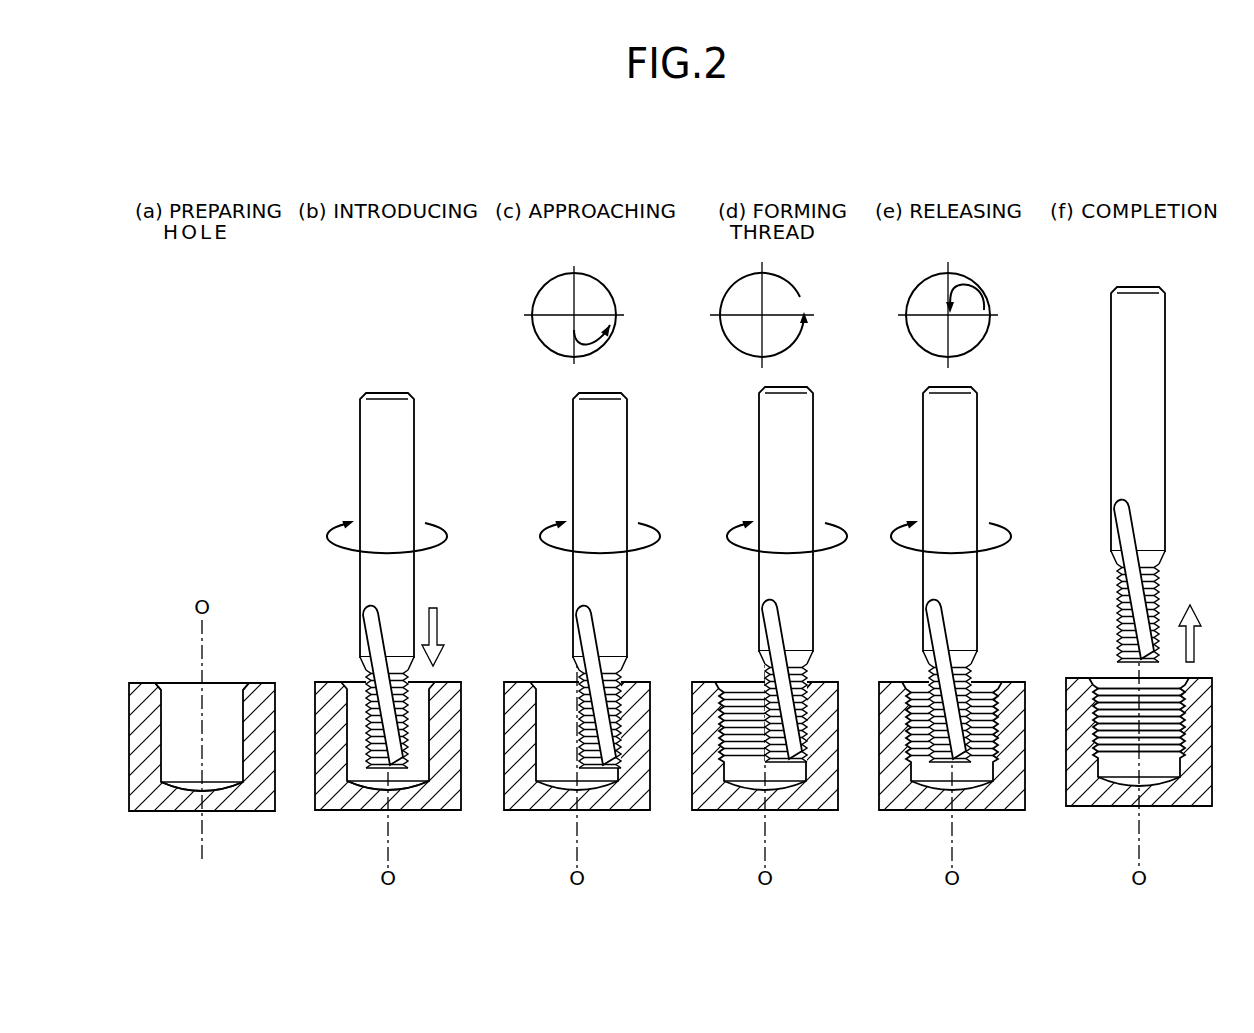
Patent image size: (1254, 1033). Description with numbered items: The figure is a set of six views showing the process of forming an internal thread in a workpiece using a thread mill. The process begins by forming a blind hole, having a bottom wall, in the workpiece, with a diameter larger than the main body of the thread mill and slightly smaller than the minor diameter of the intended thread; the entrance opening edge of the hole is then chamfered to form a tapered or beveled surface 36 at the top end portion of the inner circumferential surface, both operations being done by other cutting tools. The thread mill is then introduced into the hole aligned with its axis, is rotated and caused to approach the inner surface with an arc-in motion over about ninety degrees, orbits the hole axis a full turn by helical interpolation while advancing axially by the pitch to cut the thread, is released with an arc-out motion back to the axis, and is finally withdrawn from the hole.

The beveled surface 36 is at (244, 683).